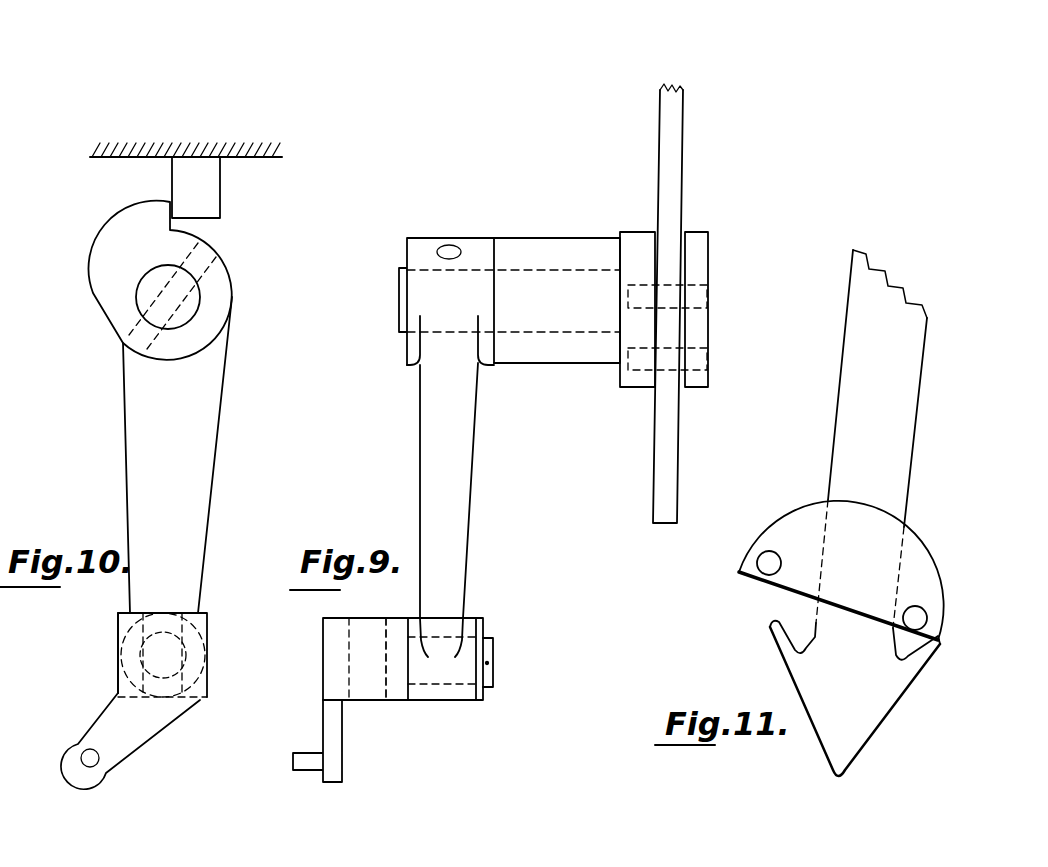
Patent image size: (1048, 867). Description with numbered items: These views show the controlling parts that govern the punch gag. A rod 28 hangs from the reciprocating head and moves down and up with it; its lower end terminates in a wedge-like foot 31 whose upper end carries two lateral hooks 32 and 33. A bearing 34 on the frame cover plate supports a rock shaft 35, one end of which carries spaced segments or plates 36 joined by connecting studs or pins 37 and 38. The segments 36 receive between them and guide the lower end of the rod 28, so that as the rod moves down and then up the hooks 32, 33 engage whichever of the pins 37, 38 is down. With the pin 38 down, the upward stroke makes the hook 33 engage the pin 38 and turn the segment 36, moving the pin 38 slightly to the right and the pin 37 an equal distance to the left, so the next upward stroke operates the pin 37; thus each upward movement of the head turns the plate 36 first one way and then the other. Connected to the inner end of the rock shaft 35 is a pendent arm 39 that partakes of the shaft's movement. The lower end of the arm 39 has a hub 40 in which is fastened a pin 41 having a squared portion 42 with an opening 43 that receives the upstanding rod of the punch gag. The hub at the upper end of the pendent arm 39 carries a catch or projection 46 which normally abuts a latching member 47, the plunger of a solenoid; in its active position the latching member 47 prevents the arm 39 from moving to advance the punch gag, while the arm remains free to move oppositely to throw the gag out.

In FIG. 9, the rod 28 is at (678, 142).
In FIG. 11, the rod 28 is at (912, 386).
In FIG. 9, the wedge-like foot 31 is at (670, 430).
In FIG. 11, the wedge-like foot 31 is at (875, 715).
In FIG. 11, the lateral hook 32 is at (770, 630).
In FIG. 11, the lateral hook 33 is at (932, 657).
In FIG. 9, the bearing 34 is at (562, 360).
In FIG. 10, the rock shaft 35 is at (190, 300).
In FIG. 9, the rock shaft 35 is at (550, 270).
In FIG. 9, the segment 36 is at (697, 232).
In FIG. 11, the segment 36 is at (928, 562).
In FIG. 9, the pin 37 is at (670, 295).
In FIG. 11, the pin 37 is at (765, 556).
In FIG. 9, the pin 38 is at (682, 363).
In FIG. 11, the pin 38 is at (918, 618).
In FIG. 10, the pendent arm 39 is at (205, 480).
In FIG. 9, the pendent arm 39 is at (465, 512).
In FIG. 10, the hub 40 is at (195, 700).
In FIG. 9, the hub 40 is at (458, 700).
In FIG. 10, the pin 41 is at (180, 665).
In FIG. 9, the pin 41 is at (493, 668).
In FIG. 10, the squared portion 42 is at (118, 633).
In FIG. 9, the squared portion 42 is at (323, 665).
In FIG. 10, the opening 43 is at (170, 715).
In FIG. 9, the opening 43 is at (378, 685).
In FIG. 10, the catch 46 is at (127, 218).
In FIG. 10, the latching member 47 is at (215, 190).